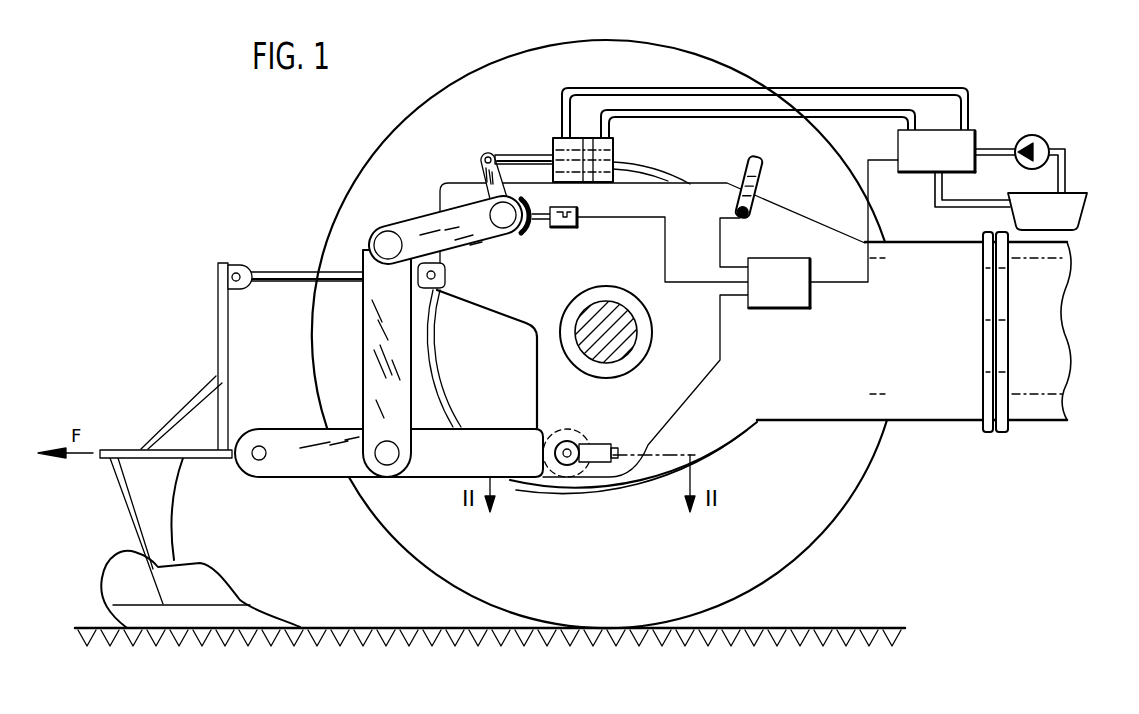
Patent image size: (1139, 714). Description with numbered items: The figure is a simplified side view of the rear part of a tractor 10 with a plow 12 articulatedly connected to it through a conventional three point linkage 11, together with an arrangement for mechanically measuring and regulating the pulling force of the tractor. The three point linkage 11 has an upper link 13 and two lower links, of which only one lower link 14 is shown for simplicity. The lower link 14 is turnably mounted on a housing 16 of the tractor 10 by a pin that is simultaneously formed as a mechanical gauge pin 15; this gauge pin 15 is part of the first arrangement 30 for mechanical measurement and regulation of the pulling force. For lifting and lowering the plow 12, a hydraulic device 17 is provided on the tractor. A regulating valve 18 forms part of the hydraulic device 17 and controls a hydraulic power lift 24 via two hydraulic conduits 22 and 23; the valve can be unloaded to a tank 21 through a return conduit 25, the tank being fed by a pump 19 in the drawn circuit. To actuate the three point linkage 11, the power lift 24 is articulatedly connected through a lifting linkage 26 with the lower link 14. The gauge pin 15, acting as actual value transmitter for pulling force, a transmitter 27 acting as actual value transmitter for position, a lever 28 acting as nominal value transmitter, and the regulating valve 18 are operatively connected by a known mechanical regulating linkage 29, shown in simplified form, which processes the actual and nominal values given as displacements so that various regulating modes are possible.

The tractor 10 is at (1080, 360).
The three point linkage 11 is at (274, 262).
The plow 12 is at (216, 596).
The upper link 13 is at (292, 283).
The lower link 14 is at (312, 463).
The gauge pin 15 is at (567, 441).
The housing 16 is at (929, 400).
The hydraulic device 17 is at (765, 87).
The regulating valve 18 is at (960, 148).
The pump 19 is at (1038, 148).
The tank 21 is at (1086, 216).
The hydraulic conduit 22 is at (634, 65).
The hydraulic conduit 23 is at (662, 112).
The hydraulic power lift 24 is at (563, 148).
The return conduit 25 is at (933, 199).
The lifting linkage 26 is at (421, 225).
The transmitter 27 is at (565, 229).
The lever 28 is at (764, 177).
The mechanical regulating linkage 29 is at (780, 292).
The first arrangement 30 is at (540, 503).